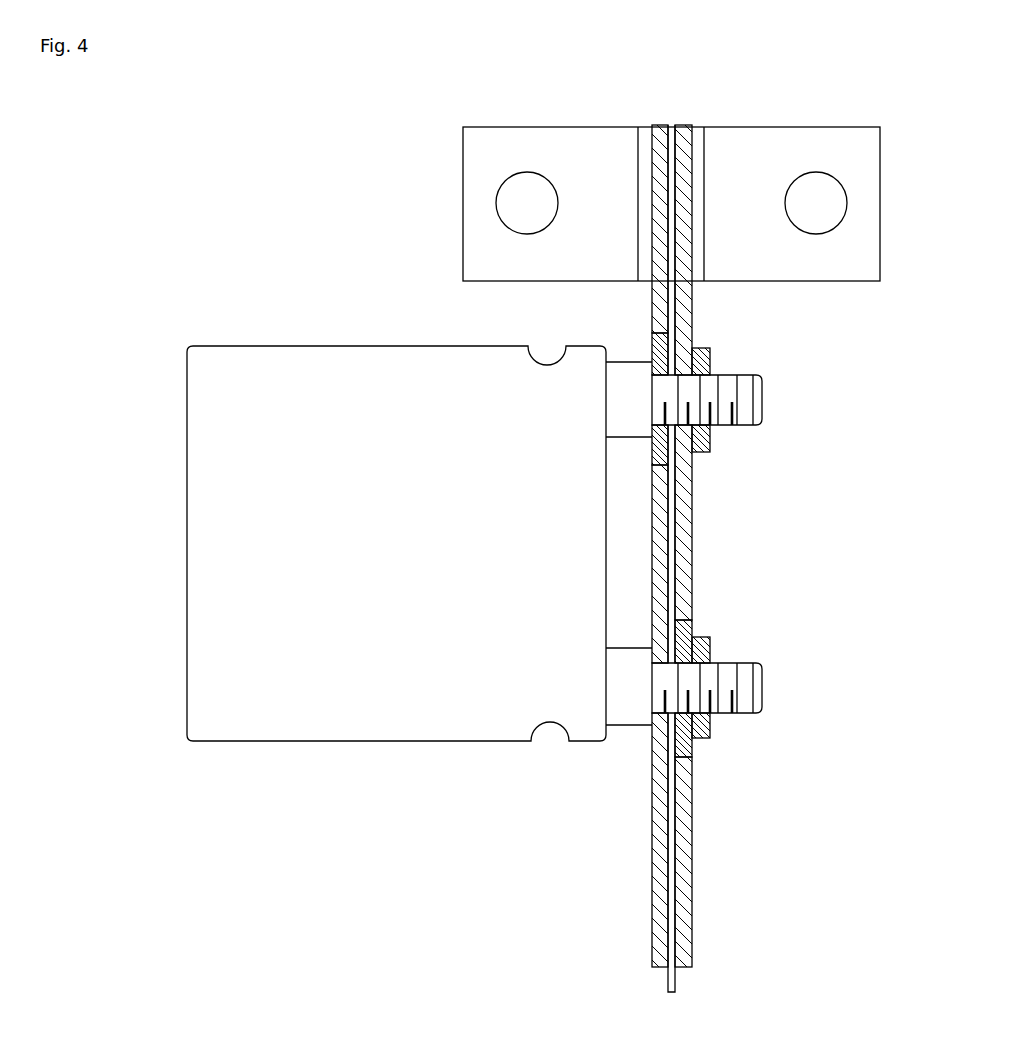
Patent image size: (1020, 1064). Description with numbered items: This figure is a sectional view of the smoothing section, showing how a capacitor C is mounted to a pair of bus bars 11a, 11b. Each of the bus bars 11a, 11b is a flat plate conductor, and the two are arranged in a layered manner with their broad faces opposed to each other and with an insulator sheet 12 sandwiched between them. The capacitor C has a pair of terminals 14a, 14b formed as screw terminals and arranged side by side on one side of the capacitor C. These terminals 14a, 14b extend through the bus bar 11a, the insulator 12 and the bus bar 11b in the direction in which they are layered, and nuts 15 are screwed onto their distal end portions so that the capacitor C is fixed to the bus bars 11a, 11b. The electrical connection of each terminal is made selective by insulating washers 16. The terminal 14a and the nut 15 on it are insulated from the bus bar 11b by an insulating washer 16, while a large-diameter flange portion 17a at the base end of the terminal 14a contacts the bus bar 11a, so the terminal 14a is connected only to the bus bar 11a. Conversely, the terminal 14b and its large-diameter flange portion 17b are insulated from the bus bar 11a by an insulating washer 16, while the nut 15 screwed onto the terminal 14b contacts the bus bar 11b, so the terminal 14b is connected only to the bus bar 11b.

The capacitor C is at (367, 742).
The bus bar 11a is at (652, 882).
The bus bar 11b is at (692, 882).
The insulator sheet 12 is at (677, 985).
The terminal 14a is at (762, 693).
The terminal 14b is at (762, 405).
The nut 15 is at (710, 440).
The insulating washer 16 is at (652, 345).
The large-diameter flange portion 17a is at (617, 738).
The large-diameter flange portion 17b is at (623, 385).